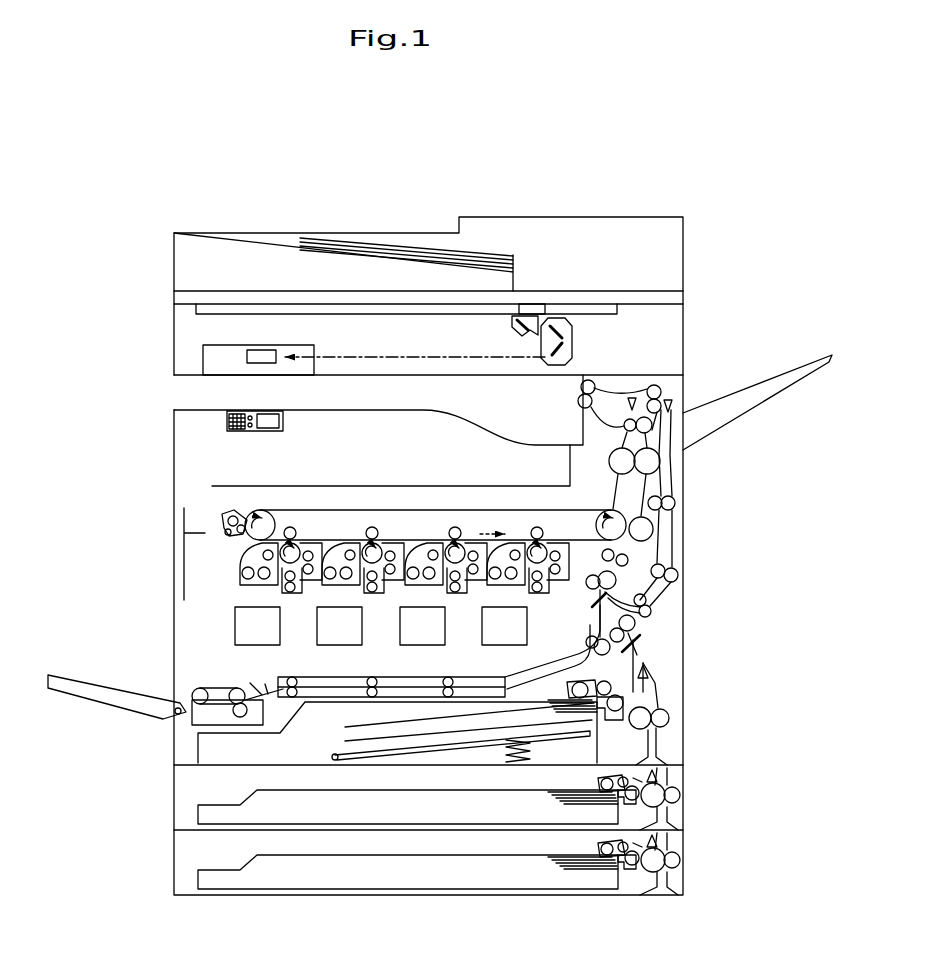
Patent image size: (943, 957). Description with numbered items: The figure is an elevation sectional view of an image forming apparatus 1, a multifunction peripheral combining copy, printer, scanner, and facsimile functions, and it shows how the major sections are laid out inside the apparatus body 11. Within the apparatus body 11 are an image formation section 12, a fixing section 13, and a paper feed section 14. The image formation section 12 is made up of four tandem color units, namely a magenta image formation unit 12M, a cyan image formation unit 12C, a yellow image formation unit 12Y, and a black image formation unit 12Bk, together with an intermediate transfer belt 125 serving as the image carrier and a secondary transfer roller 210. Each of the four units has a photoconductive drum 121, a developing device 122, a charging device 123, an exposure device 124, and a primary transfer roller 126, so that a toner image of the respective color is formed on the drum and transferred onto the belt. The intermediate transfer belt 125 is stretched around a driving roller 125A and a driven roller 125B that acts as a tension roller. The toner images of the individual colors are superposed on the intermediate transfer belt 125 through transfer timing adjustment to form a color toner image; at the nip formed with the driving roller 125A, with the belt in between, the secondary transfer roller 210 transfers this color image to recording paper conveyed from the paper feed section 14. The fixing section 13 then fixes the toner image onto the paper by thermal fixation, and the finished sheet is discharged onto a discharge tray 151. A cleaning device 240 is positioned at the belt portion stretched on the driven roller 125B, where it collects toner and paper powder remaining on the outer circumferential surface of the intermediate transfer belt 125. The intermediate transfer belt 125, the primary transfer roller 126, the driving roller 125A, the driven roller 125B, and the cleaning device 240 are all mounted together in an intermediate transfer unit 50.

The image forming apparatus 1 is at (101, 285).
The apparatus body 11 is at (171, 432).
The image formation section 12 is at (209, 545).
The magenta image formation unit 12M is at (289, 525).
The cyan image formation unit 12C is at (372, 525).
The yellow image formation unit 12Y is at (455, 525).
The black image formation unit 12Bk is at (537, 525).
The fixing section 13 is at (662, 462).
The paper feed section 14 is at (191, 790).
The intermediate transfer unit 50 is at (335, 486).
The photoconductive drum 121 is at (272, 606).
The developing device 122 is at (201, 564).
The charging device 123 is at (321, 619).
The exposure device 124 is at (200, 626).
The intermediate transfer belt 125 is at (280, 518).
The driving roller 125A is at (611, 520).
The driven roller 125B is at (241, 515).
The primary transfer roller 126 is at (309, 513).
The discharge tray 151 is at (547, 443).
The secondary transfer roller 210 is at (655, 535).
The cleaning device 240 is at (222, 518).